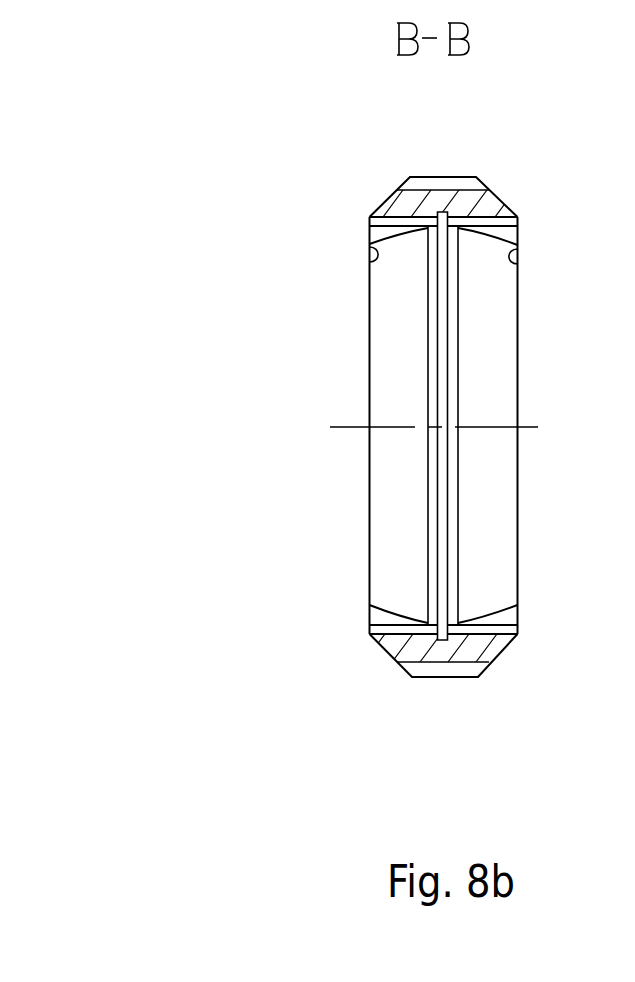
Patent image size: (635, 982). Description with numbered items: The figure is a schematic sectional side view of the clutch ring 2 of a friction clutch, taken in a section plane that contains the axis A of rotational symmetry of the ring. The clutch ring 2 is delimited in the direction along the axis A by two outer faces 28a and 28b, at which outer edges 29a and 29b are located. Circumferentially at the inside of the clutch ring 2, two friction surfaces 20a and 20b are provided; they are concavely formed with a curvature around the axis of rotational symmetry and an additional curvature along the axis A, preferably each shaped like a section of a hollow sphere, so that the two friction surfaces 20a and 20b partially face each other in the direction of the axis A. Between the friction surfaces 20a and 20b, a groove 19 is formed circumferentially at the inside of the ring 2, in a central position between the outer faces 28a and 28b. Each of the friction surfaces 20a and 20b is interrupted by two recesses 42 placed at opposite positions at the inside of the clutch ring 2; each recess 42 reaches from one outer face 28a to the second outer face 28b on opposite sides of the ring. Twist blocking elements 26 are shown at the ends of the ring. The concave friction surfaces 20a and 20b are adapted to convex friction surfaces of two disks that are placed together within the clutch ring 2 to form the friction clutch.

The clutch ring 2 is at (490, 205).
The groove 19 is at (441, 212).
The twist blocking elements 26 is at (452, 177).
The friction surface 20a is at (408, 237).
The friction surface 20b is at (483, 248).
The outer face 28a is at (368, 233).
The outer face 28b is at (517, 235).
The outer edge 29a is at (369, 257).
The outer edge 29b is at (517, 262).
The recess 42 is at (396, 231).
The axis A is at (342, 427).